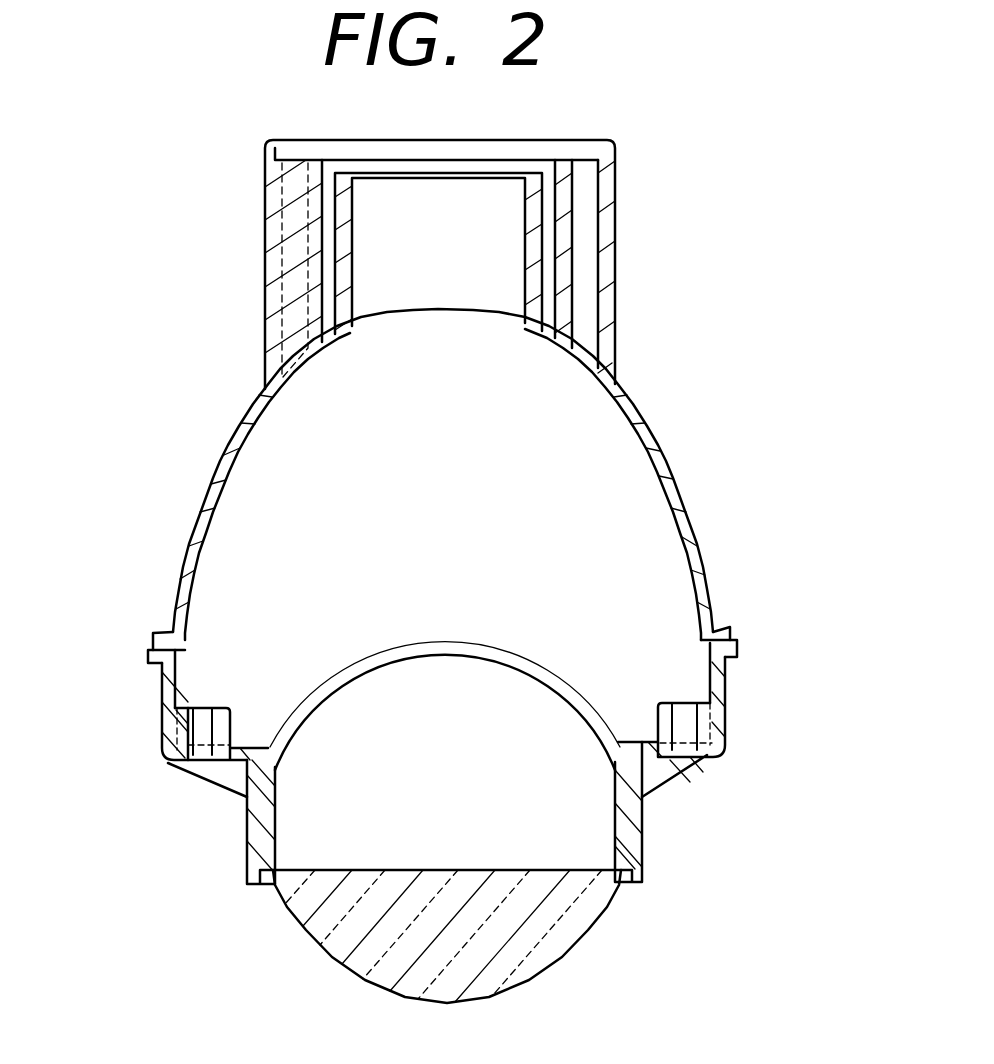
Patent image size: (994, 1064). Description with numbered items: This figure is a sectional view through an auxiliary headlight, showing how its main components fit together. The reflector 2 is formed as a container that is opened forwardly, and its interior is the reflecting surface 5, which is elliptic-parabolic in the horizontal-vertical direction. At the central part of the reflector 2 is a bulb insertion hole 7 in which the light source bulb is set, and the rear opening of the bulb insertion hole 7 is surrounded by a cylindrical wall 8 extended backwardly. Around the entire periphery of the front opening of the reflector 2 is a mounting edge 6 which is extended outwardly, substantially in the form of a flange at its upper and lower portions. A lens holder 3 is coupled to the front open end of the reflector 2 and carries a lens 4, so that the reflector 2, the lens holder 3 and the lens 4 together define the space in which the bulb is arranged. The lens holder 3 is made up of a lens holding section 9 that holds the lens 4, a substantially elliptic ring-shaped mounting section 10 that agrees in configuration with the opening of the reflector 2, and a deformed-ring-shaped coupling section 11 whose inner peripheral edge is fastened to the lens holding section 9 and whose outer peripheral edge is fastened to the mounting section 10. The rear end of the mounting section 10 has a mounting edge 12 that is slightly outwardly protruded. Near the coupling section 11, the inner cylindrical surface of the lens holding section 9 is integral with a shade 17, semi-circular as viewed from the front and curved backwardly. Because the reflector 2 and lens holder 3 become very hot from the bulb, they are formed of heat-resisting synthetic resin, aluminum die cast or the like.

The reflector 2 is at (617, 235).
The lens holder 3 is at (727, 727).
The lens 4 is at (588, 937).
The reflecting surface 5 is at (626, 440).
The mounting edge 6 is at (722, 628).
The bulb insertion hole 7 is at (525, 305).
The cylindrical wall 8 is at (610, 182).
The lens holding section 9 is at (634, 836).
The mounting section 10 is at (163, 737).
The coupling section 11 is at (657, 757).
The mounting edge 12 is at (738, 643).
The shade 17 is at (492, 650).